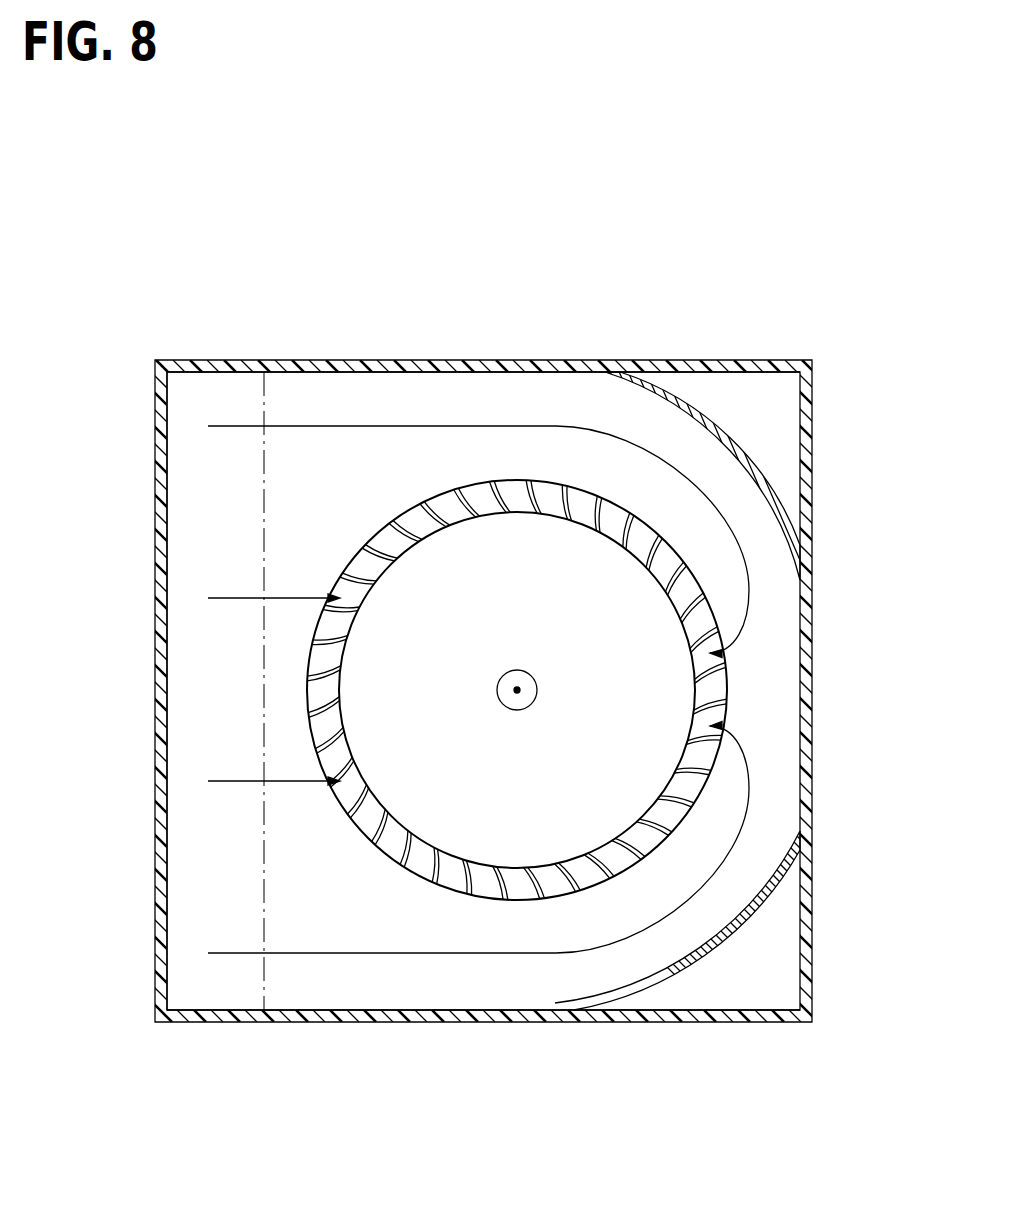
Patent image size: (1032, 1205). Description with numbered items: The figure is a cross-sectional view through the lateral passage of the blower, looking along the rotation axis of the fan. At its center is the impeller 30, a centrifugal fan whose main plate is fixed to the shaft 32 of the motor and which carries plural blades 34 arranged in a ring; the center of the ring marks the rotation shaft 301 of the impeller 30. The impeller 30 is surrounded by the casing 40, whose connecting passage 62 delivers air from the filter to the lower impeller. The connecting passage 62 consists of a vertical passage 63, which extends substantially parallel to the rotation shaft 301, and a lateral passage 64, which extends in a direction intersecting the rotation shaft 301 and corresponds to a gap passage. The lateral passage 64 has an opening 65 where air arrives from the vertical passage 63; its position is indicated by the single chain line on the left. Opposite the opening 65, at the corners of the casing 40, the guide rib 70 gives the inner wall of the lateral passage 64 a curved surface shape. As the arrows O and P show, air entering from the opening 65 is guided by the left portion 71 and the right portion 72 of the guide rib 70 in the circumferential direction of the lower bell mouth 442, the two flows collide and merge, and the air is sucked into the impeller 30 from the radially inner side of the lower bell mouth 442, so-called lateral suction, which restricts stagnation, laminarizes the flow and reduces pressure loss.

The arrow indicating air flow O is at (343, 426).
The arrow indicating air flow P is at (343, 953).
The impeller 30 is at (517, 691).
The blades 34 is at (565, 896).
The lower bell mouth 442 is at (495, 888).
The shaft 32 is at (527, 668).
The rotation shaft 301 is at (517, 688).
The casing 40 is at (412, 1016).
The connecting passage 62 is at (516, 691).
The vertical passage 63 is at (210, 692).
The lateral passage 64 is at (438, 400).
The opening 65 is at (262, 860).
The guide rib 70 is at (766, 695).
The left portion 71 is at (738, 446).
The right portion 72 is at (741, 928).